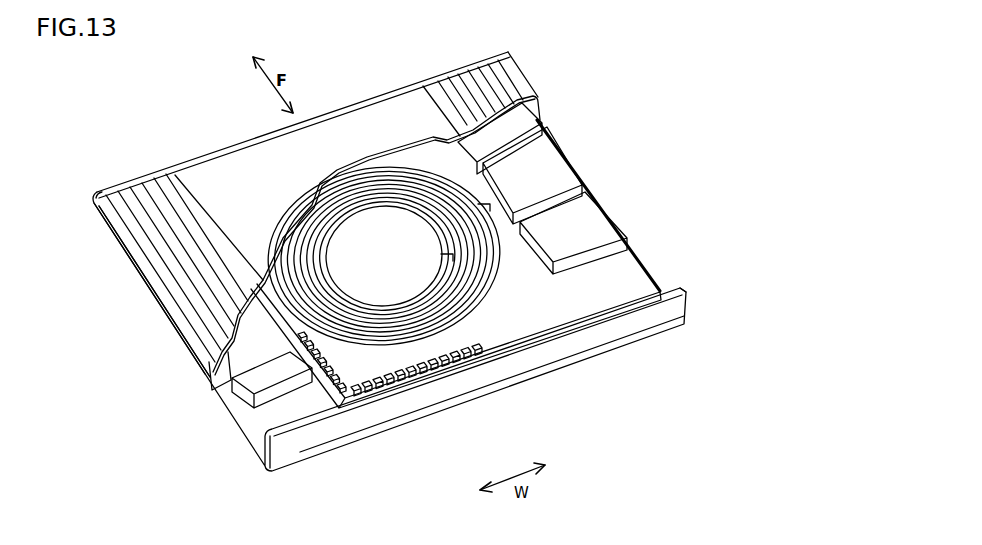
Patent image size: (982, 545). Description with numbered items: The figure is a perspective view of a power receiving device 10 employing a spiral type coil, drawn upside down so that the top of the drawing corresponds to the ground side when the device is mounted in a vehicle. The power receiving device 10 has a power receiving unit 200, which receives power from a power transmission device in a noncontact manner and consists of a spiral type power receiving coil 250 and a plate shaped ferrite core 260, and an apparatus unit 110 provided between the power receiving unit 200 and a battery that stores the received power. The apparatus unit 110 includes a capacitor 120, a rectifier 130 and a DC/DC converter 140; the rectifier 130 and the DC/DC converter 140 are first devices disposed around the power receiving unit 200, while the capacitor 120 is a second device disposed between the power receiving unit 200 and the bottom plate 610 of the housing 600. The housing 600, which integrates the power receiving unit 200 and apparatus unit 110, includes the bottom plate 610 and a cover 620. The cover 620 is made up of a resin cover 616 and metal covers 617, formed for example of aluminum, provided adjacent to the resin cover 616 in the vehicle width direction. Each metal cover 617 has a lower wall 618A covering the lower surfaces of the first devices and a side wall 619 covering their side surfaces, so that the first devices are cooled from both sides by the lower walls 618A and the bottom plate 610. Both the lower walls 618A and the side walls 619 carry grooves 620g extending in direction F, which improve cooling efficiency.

The power receiving device 10 is at (625, 405).
The apparatus unit 110 is at (604, 173).
The capacitor 120 is at (380, 395).
The rectifier 130 is at (590, 225).
The DC/DC converter 140 is at (273, 406).
The power receiving unit 200 is at (592, 415).
The power receiving coil 250 is at (515, 290).
The ferrite core 260 is at (490, 318).
The housing 600 is at (378, 123).
The bottom plate 610 is at (562, 274).
The resin cover 616 is at (231, 163).
The metal cover 617 is at (160, 185).
The lower wall 618A is at (145, 213).
The side wall 619 is at (142, 274).
The cover 620 is at (415, 105).
The grooves 620g is at (500, 66).